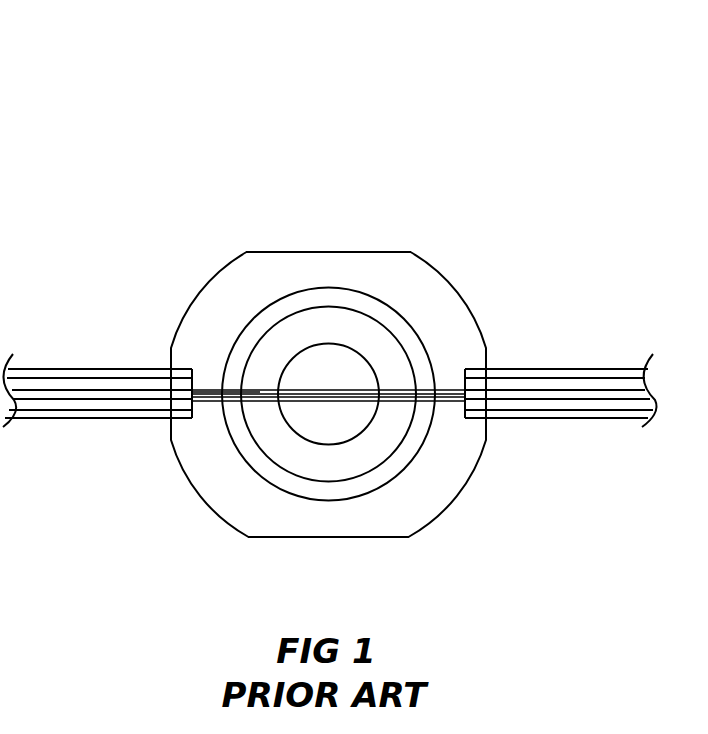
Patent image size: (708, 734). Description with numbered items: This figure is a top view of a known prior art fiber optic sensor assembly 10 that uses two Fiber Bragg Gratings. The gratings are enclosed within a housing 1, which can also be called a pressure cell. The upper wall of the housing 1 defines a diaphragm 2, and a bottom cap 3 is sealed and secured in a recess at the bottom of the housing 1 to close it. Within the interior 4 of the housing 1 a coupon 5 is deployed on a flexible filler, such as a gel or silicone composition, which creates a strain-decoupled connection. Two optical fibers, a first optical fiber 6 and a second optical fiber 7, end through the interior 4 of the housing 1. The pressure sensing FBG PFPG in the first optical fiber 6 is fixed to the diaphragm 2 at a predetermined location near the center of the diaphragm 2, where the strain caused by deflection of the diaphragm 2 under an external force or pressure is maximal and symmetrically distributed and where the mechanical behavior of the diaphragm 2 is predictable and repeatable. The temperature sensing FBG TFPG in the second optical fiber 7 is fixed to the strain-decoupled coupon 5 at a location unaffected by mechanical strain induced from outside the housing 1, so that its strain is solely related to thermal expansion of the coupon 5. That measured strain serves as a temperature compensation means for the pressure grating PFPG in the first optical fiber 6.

The fiber optic pressure and temperature sensor 10 is at (163, 95).
The housing 1 is at (460, 342).
The diaphragm 2 is at (257, 452).
The bottom cap 3 is at (310, 498).
The interior 4 is at (382, 445).
The coupon 5 is at (326, 443).
The first optical fiber 6 is at (267, 391).
The second optical fiber 7 is at (250, 390).
The pressure sensing FBG PFPG is at (328, 392).
The temperature sensing FBG TFPG is at (332, 392).